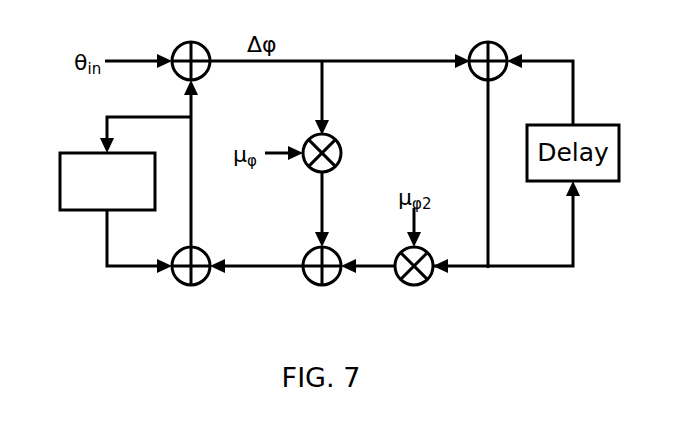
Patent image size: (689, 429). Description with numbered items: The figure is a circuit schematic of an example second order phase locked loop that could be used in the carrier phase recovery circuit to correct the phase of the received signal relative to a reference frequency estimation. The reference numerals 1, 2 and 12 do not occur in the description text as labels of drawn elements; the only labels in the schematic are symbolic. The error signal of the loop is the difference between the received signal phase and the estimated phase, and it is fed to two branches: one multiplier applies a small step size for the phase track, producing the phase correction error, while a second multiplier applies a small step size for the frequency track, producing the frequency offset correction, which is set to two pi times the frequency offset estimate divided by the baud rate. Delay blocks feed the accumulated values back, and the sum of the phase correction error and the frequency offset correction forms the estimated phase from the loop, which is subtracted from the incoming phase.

The phase estimate phi_1 path (multiplier mu_phi) 1 is at (317, 190).
The phase estimate phi_2 path (multiplier mu_phi2) 2 is at (398, 261).
The delay feedback of phi_1+phi_2 12 is at (125, 180).